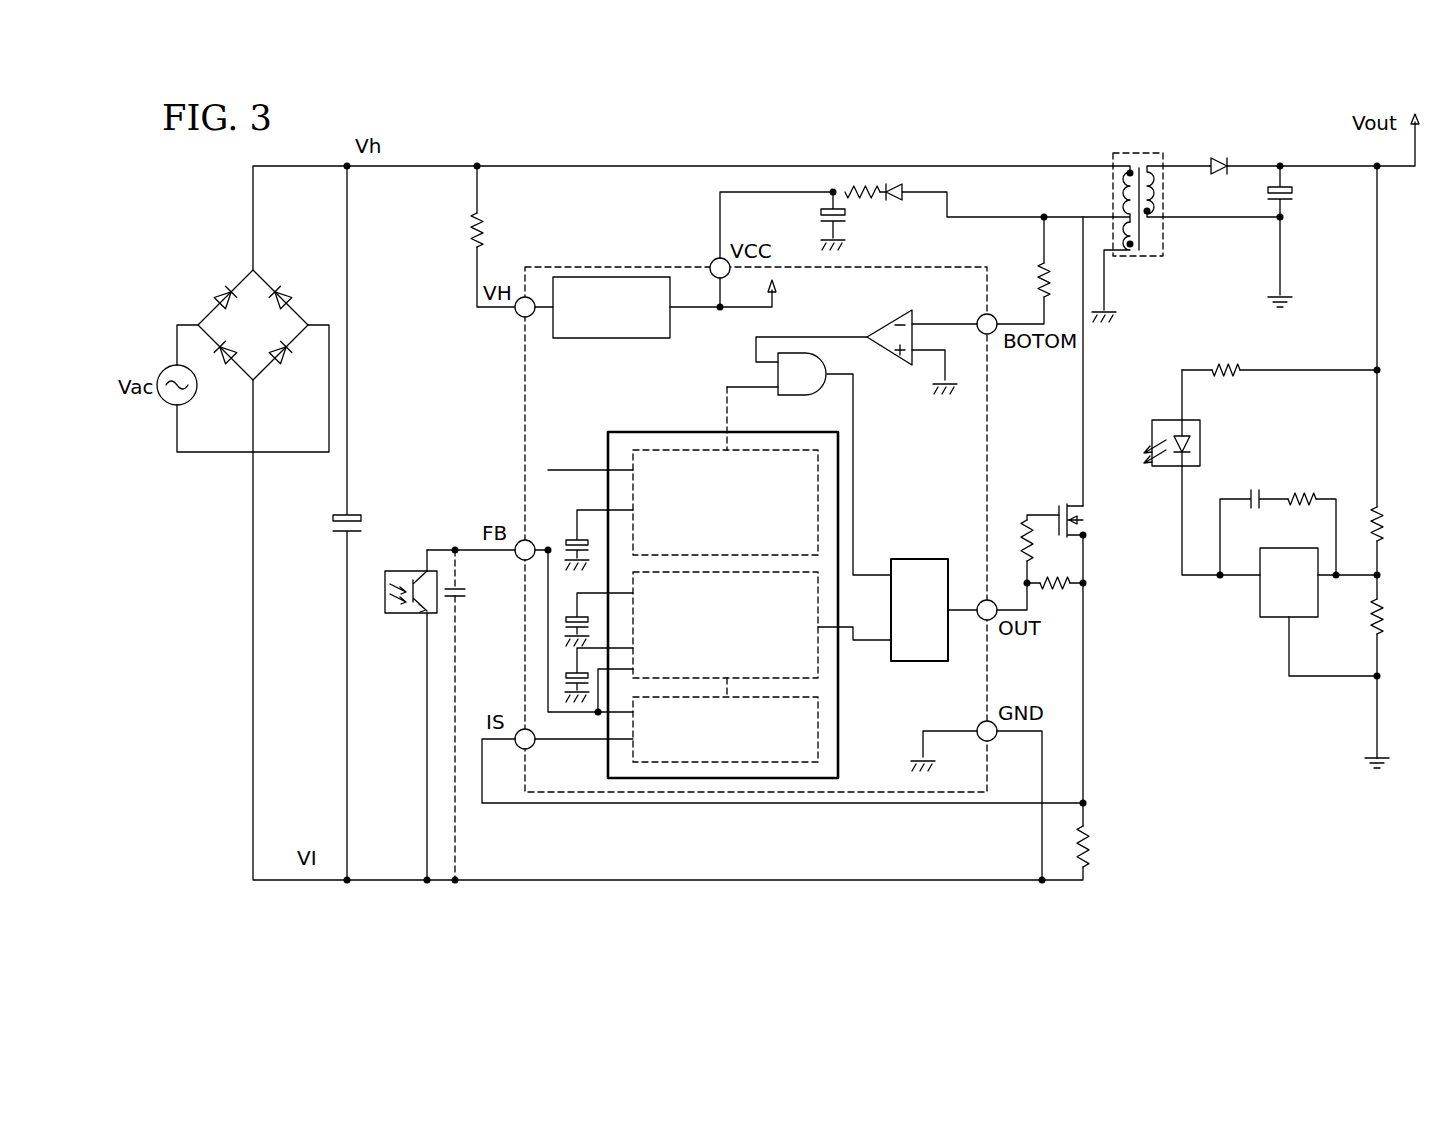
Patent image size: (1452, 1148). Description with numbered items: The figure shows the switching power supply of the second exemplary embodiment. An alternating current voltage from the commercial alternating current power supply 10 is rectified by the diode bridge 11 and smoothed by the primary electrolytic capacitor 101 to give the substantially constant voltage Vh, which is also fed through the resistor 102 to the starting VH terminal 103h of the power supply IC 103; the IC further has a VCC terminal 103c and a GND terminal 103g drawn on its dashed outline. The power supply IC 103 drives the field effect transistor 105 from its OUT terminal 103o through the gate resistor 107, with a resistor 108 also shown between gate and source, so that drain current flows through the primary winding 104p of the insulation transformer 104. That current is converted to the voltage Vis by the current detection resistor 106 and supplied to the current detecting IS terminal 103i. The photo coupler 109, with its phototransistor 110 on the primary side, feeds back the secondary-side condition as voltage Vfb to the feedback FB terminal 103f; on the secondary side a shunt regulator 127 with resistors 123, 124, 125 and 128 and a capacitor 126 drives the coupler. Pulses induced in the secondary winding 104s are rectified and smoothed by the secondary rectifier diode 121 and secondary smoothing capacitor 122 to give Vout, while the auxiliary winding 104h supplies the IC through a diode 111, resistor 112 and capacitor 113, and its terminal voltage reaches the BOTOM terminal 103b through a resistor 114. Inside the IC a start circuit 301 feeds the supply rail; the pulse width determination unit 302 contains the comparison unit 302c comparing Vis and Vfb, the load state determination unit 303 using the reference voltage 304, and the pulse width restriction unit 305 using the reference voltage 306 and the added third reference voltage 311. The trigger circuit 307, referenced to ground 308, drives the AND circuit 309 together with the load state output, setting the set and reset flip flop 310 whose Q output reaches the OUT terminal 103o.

The commercial alternating current power supply 10 is at (197, 387).
The diode bridge 11 is at (248, 273).
The primary electrolytic capacitor 101 is at (353, 510).
The resistor 102 is at (472, 228).
The power supply IC 103 is at (596, 266).
The starting VH terminal 103h is at (518, 315).
The VCC terminal 103c is at (712, 261).
The BOTOM terminal 103b is at (990, 336).
The feedback FB terminal 103f is at (521, 540).
The current detecting IS terminal 103i is at (520, 728).
The OUT terminal 103o is at (990, 623).
The GND terminal 103g is at (978, 722).
The insulation transformer 104 is at (1140, 154).
The primary winding 104p is at (1125, 184).
The secondary winding 104s is at (1154, 194).
The auxiliary winding 104h is at (1140, 245).
The field effect transistor 105 is at (1084, 519).
The current detection resistor 106 is at (1094, 847).
The gate resistor 107 is at (1022, 538).
The resistor 108 is at (1060, 588).
The photo coupler 109 is at (410, 570).
The phototransistor 110 is at (427, 613).
The diode 111 is at (900, 198).
The resistor 112 is at (866, 196).
The capacitor 113 is at (820, 211).
The resistor 114 is at (1040, 274).
The secondary rectifier diode 121 is at (1215, 160).
The secondary smoothing capacitor 122 is at (1291, 193).
The voltage dividing resistor 123 is at (1386, 520).
The voltage dividing resistor 124 is at (1386, 614).
The resistor 125 is at (1299, 492).
The capacitor 126 is at (1255, 489).
The shunt regulator 127 is at (1262, 614).
The resistor 128 is at (1221, 367).
The start circuit 301 is at (607, 338).
The pulse width determination unit 302 is at (725, 778).
The comparison unit 302c is at (818, 735).
The load state determination unit 303 is at (667, 448).
The reference voltage 304 is at (563, 548).
The pulse width restriction unit 305 is at (820, 666).
The reference voltage 306 is at (563, 675).
The trigger circuit 307 is at (882, 322).
The reference voltage 308 is at (934, 388).
The AND circuit 309 is at (774, 379).
The set and reset flip flop 310 is at (921, 559).
The third reference voltage 311 is at (557, 623).